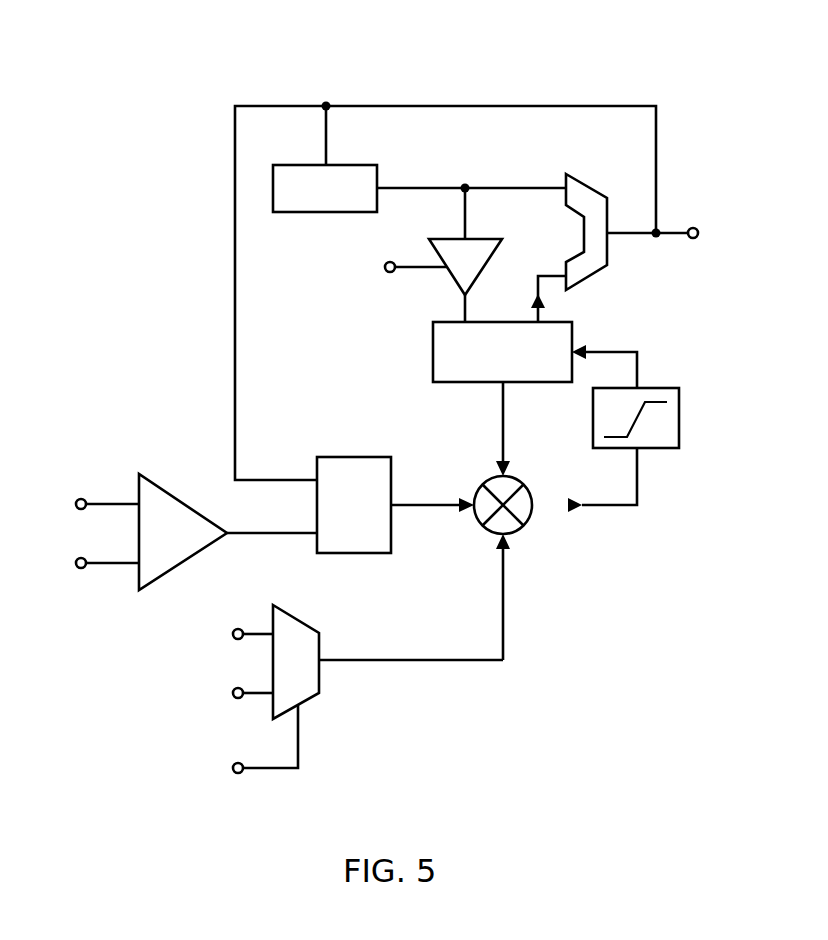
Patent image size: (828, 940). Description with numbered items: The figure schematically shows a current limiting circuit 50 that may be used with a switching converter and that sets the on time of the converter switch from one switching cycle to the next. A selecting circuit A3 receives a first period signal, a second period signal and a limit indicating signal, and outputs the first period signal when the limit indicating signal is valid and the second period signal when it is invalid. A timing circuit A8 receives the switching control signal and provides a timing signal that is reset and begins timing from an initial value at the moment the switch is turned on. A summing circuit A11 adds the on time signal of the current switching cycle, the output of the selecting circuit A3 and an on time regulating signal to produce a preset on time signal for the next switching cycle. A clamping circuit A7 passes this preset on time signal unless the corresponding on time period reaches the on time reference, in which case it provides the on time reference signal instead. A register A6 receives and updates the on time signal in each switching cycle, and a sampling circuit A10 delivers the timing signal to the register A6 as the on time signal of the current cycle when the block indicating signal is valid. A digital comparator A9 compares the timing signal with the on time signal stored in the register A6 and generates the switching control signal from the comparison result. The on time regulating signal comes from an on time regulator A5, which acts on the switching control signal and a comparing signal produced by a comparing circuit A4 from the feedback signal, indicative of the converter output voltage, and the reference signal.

The current limiting circuit 50 is at (72, 163).
The selecting circuit A3 is at (312, 697).
The comparing circuit A4 is at (196, 532).
The on time regulator A5 is at (354, 505).
The register A6 is at (535, 355).
The clamping circuit A7 is at (680, 388).
The timing circuit A8 is at (419, 159).
The digital comparator A9 is at (592, 191).
The sampling circuit A10 is at (443, 255).
The summing circuit A11 is at (520, 527).